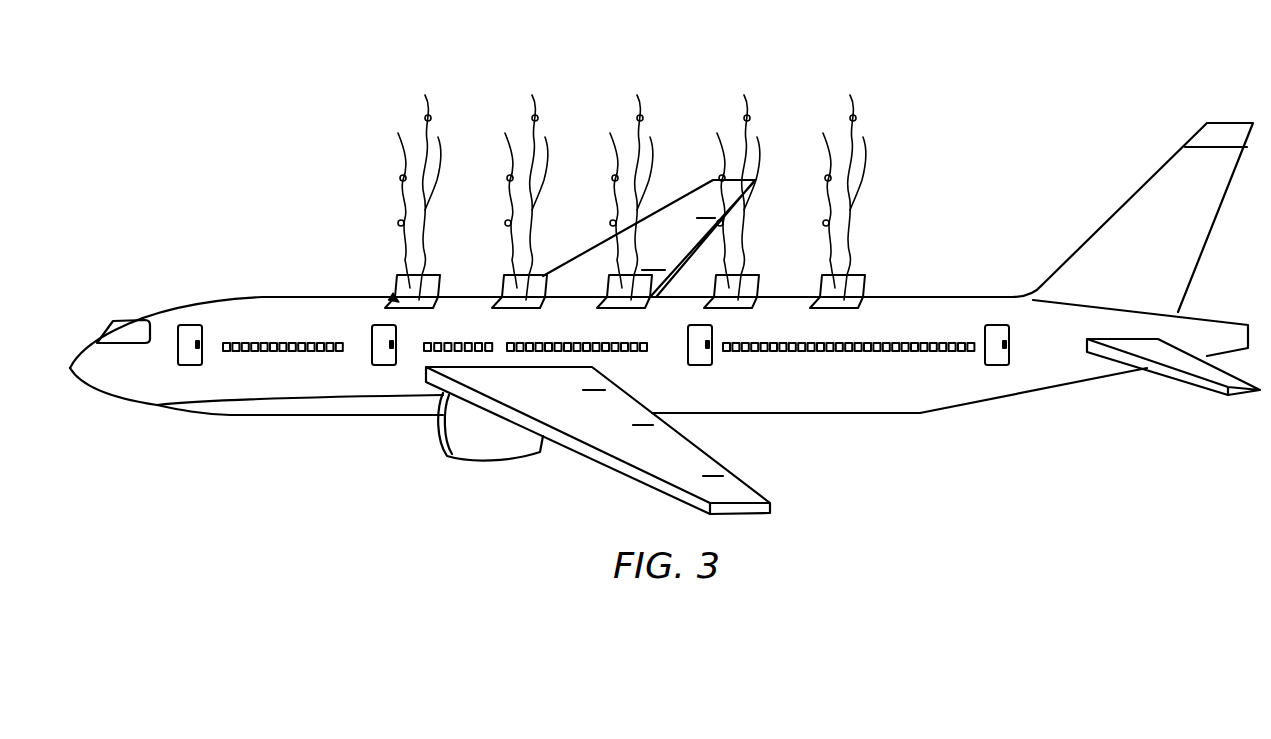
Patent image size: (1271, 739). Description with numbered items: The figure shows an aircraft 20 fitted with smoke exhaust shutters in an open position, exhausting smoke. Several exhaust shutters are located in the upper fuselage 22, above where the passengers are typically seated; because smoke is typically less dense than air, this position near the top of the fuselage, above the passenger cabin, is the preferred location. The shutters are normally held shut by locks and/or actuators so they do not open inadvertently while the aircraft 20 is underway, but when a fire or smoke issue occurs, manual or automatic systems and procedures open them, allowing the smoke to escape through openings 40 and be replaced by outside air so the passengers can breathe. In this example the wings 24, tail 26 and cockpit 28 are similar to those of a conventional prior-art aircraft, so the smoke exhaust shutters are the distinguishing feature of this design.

The aircraft 20 is at (1060, 103).
The upper fuselage 22 is at (318, 296).
The wings 24 is at (669, 460).
The tail 26 is at (1213, 178).
The cockpit 28 is at (110, 330).
The openings 40 is at (390, 296).